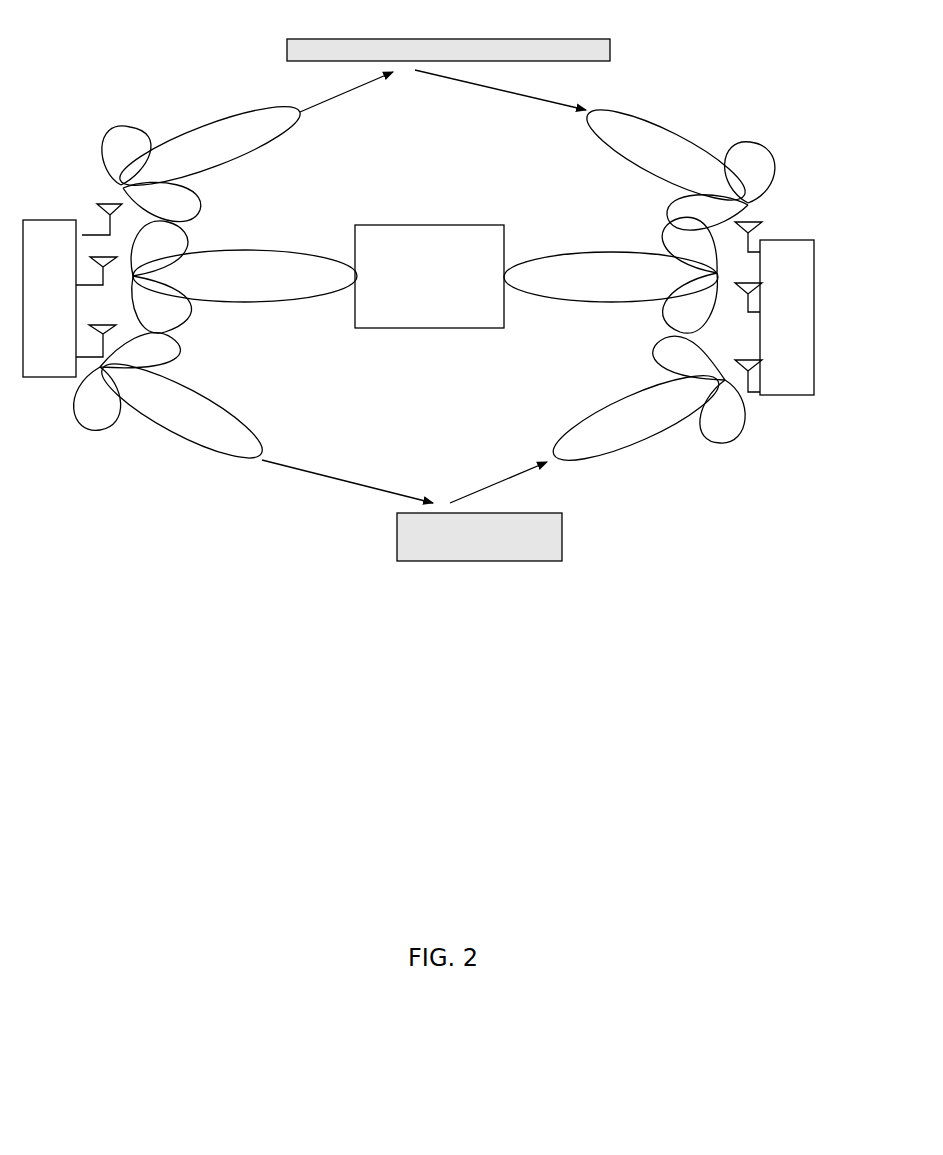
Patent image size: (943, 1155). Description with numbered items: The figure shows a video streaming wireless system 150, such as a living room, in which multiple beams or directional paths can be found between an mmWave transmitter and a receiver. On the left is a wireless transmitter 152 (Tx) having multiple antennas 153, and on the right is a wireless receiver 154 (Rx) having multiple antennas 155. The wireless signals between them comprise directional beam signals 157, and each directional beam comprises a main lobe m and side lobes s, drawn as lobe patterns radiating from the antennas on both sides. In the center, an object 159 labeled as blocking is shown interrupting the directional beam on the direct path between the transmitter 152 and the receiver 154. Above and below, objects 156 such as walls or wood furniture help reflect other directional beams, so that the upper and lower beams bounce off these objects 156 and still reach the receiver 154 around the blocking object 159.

The video streaming wireless system 150 is at (426, 411).
The wireless transmitter 152 is at (33, 378).
The antennas 153 is at (100, 203).
The wireless receiver 154 is at (793, 397).
The antennas 155 is at (757, 217).
The objects 156 is at (327, 37).
The directional beam signals 157 is at (213, 392).
The object 159 is at (425, 335).